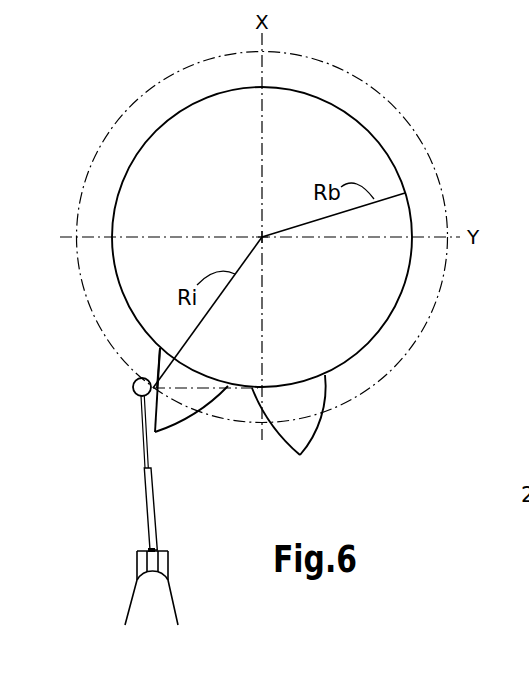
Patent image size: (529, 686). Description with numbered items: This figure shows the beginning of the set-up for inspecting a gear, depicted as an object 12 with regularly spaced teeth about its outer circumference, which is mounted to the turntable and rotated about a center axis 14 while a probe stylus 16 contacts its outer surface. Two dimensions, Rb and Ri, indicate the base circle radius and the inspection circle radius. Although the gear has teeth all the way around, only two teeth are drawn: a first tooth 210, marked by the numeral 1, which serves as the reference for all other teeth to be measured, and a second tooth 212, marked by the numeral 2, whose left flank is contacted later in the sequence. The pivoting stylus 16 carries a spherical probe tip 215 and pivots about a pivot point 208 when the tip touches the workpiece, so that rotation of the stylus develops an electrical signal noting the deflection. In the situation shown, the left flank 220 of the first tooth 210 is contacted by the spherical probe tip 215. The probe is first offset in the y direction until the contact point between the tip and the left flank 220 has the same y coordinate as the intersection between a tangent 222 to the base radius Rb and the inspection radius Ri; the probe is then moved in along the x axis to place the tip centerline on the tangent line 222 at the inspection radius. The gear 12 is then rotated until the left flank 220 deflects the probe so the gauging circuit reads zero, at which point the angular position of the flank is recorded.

The object 12 is at (370, 163).
The center axis 14 is at (267, 242).
The probe stylus 16 is at (147, 495).
The pivot point 208 is at (156, 549).
The first tooth 210 is at (191, 419).
The second tooth 212 is at (323, 421).
The spherical probe tip 215 is at (133, 393).
The left flank 220 is at (157, 352).
The tangent line 222 is at (188, 386).
The blade position 1 is at (191, 390).
The blade position 2 is at (289, 415).